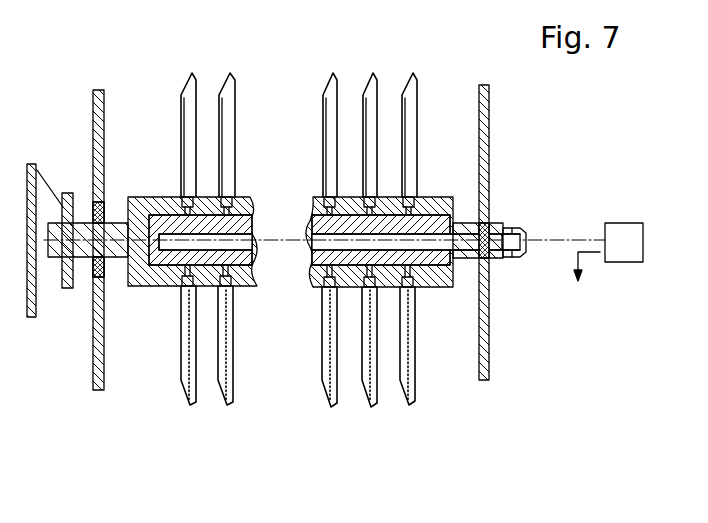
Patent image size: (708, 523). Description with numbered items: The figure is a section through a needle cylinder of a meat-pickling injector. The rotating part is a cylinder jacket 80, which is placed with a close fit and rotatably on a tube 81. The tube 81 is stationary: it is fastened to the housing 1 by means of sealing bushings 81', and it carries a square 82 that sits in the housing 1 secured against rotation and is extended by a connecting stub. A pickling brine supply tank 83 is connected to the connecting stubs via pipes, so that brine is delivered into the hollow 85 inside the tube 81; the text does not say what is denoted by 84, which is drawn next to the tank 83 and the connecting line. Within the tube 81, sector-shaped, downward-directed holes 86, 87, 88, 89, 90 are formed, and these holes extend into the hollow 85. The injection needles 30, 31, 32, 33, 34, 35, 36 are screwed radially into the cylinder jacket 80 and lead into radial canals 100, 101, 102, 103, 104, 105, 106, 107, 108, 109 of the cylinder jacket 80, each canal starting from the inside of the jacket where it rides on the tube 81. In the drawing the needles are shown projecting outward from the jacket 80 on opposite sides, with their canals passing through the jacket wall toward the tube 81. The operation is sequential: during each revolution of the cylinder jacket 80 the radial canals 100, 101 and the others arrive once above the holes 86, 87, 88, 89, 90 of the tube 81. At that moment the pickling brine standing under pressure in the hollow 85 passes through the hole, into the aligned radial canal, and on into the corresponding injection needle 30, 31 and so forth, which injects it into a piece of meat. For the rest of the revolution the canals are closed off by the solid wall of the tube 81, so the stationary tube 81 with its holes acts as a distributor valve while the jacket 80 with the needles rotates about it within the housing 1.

The housing 1 is at (37, 293).
The sealing bushings 81' is at (69, 286).
The cylinder jacket 80 is at (447, 290).
The tube 81 is at (334, 273).
The square 82 is at (512, 228).
The pickling brine supply tank 83 is at (635, 256).
The rotation direction 84 is at (585, 268).
The injection needle 30 is at (187, 100).
The injection needle 31 is at (228, 95).
The injection needle 32 is at (330, 95).
The injection needle 33 is at (367, 95).
The injection needle 34 is at (410, 95).
The injection needle 35 is at (180, 367).
The injection needle 36 is at (227, 377).
The hole 86 is at (347, 290).
The hole 87 is at (390, 290).
The radial canal 108 is at (380, 290).
The radial canal 109 is at (423, 290).
The hollow 85 is at (313, 243).
The hole 88 is at (313, 268).
The hole 89 is at (249, 263).
The hole 90 is at (167, 263).
The radial canal 100 is at (183, 207).
The radial canal 101 is at (237, 207).
The radial canal 102 is at (325, 208).
The radial canal 103 is at (383, 207).
The radial canal 104 is at (412, 205).
The radial canal 105 is at (180, 277).
The radial canal 106 is at (233, 280).
The radial canal 107 is at (320, 290).